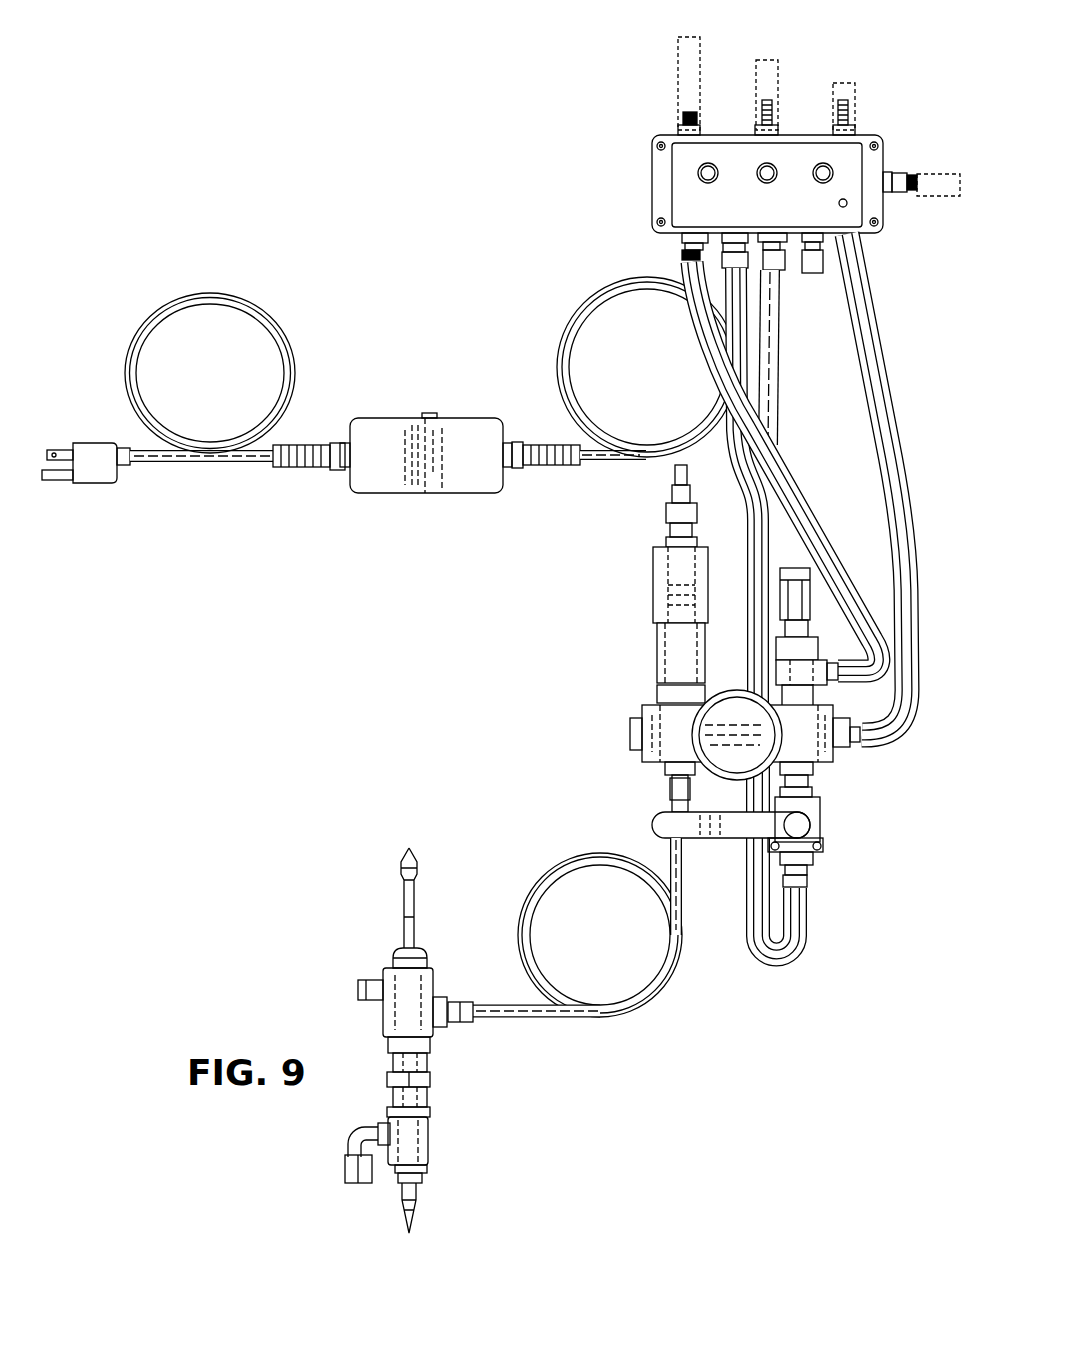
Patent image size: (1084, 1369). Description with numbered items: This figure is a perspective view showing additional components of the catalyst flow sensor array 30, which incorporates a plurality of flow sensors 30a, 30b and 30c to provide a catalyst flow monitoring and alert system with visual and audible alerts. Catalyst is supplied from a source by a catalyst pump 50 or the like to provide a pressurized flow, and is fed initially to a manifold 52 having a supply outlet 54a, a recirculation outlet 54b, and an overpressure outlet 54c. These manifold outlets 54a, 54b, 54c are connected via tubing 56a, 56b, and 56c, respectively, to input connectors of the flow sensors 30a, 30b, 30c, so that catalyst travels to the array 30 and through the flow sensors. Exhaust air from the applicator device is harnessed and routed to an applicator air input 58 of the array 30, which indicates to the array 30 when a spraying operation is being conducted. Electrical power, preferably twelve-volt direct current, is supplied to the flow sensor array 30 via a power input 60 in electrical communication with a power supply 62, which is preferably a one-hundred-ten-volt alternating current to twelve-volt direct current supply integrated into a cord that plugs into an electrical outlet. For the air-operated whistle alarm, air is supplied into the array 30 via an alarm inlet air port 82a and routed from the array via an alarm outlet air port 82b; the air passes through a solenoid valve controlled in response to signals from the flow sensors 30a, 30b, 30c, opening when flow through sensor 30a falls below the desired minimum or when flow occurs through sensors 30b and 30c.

The flow sensor array 30 is at (422, 222).
The flow sensor 30a is at (683, 113).
The flow sensor 30b is at (757, 103).
The flow sensor 30c is at (838, 103).
The applicator air input 58 is at (900, 178).
The power input 60 is at (723, 257).
The power supply 62 is at (556, 372).
The tubing 56a is at (800, 485).
The tubing 56b is at (746, 490).
The tubing 56c is at (866, 302).
The alarm inlet air port 82a is at (812, 276).
The alarm outlet air port 82b is at (775, 272).
The manifold 52 is at (622, 704).
The supply outlet 54a is at (855, 748).
The recirculation outlet 54b is at (809, 880).
The overpressure outlet 54c is at (831, 662).
The catalyst pump 50 is at (346, 1037).